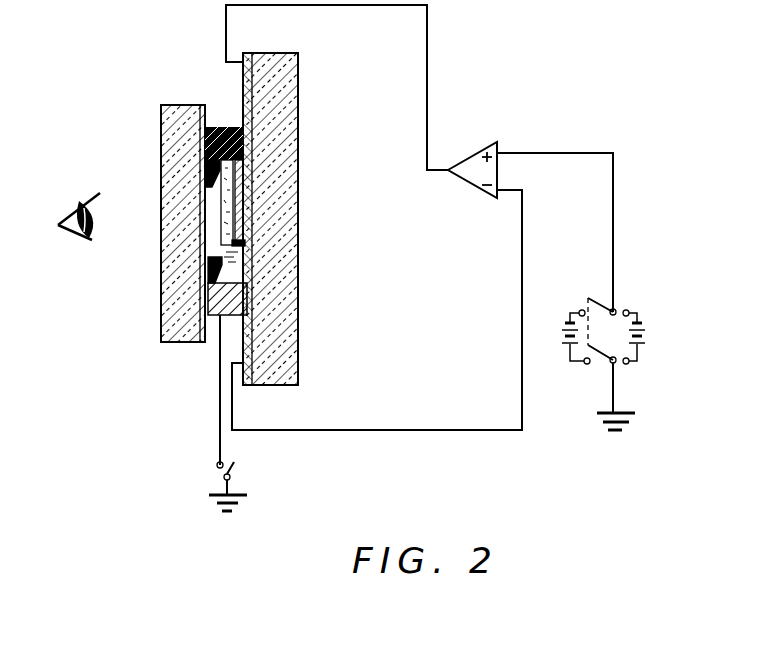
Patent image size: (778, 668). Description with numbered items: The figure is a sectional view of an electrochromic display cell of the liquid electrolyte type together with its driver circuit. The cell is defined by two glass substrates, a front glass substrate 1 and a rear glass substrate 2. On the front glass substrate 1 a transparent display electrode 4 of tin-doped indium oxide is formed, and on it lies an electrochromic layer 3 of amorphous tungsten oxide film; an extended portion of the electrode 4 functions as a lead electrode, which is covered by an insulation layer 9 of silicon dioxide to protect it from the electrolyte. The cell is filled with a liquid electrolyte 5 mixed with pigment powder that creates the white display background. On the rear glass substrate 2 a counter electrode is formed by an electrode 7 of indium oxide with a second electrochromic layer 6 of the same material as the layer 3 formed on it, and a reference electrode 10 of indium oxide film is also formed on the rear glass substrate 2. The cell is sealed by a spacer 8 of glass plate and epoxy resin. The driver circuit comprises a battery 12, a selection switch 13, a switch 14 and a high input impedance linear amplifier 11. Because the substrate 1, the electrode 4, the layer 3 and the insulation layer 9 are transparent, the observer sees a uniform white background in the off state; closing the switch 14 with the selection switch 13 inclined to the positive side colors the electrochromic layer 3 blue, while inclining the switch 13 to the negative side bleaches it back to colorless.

The front glass substrate 1 is at (160, 117).
The rear glass substrate 2 is at (288, 90).
The electrochromic layer 3 is at (253, 188).
The transparent display electrode 4 is at (205, 125).
The liquid electrolyte 5 is at (237, 237).
The electrochromic layer 6 is at (225, 205).
The electrode 7 is at (243, 62).
The spacer 8 is at (218, 330).
The insulation layer 9 is at (210, 163).
The reference electrode 10 is at (247, 387).
The high input impedance linear amplifier 11 is at (480, 150).
The battery 12 is at (648, 345).
The selection switch 13 is at (590, 300).
The switch 14 is at (216, 466).